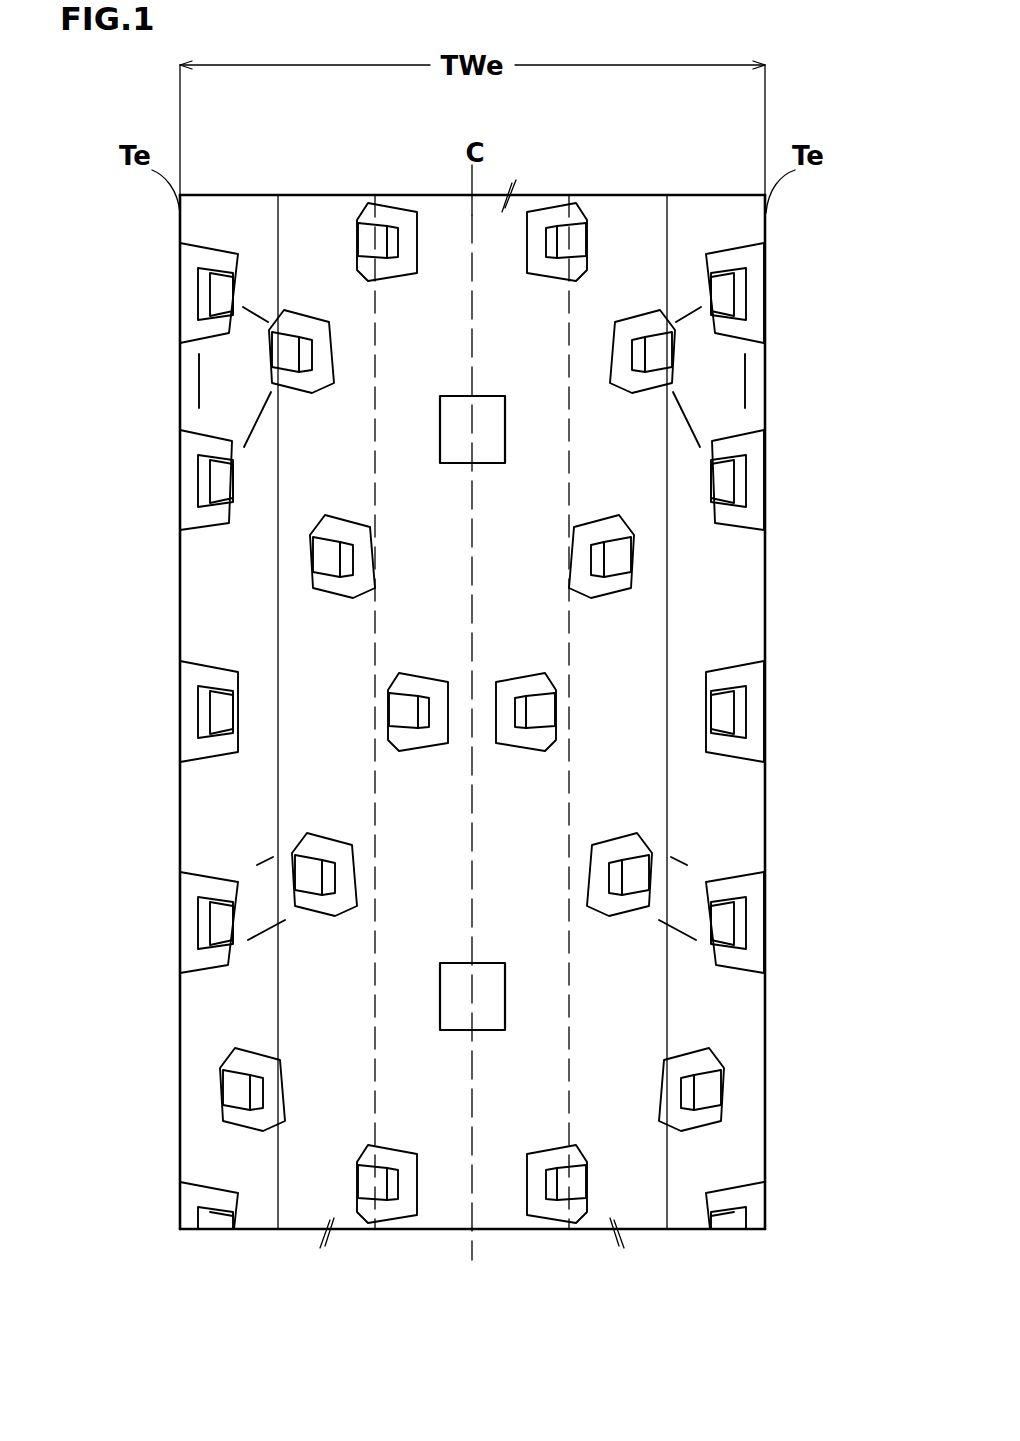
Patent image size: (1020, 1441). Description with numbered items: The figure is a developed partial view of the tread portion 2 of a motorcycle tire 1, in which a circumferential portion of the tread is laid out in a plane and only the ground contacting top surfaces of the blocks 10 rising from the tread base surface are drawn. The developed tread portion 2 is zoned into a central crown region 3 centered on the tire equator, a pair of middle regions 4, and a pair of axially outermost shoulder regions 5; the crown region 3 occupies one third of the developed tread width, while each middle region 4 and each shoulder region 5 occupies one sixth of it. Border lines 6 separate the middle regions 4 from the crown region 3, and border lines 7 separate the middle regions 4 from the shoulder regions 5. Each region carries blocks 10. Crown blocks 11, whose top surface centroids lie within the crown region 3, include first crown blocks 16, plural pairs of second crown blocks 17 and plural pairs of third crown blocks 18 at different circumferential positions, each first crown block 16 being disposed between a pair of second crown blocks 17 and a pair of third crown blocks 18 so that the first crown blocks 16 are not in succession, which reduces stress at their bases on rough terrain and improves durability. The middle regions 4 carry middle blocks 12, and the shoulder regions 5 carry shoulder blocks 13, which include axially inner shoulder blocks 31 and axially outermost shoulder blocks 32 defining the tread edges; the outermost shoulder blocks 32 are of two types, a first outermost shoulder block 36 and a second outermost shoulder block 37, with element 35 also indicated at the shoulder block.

The motorcycle tire 1 is at (392, 148).
The tread portion 2 is at (578, 158).
The crown region 3 is at (445, 225).
The middle region 4 is at (338, 222).
The shoulder region 5 is at (257, 222).
The border line 6 is at (378, 1095).
The border line 7 is at (292, 1175).
The block 10 is at (506, 789).
The crown block 11 is at (601, 789).
The middle block 12 is at (652, 347).
The shoulder block 13 is at (748, 297).
The first crown block 16 is at (460, 1025).
The second crown block 17 is at (527, 742).
The third crown block 18 is at (388, 1205).
The axially inner shoulder block 31 is at (718, 1080).
The axially outermost shoulder block 32 is at (446, 930).
The shoulder block 35 is at (240, 690).
The first outermost shoulder block 36 is at (474, 1034).
The second outermost shoulder block 37 is at (205, 718).